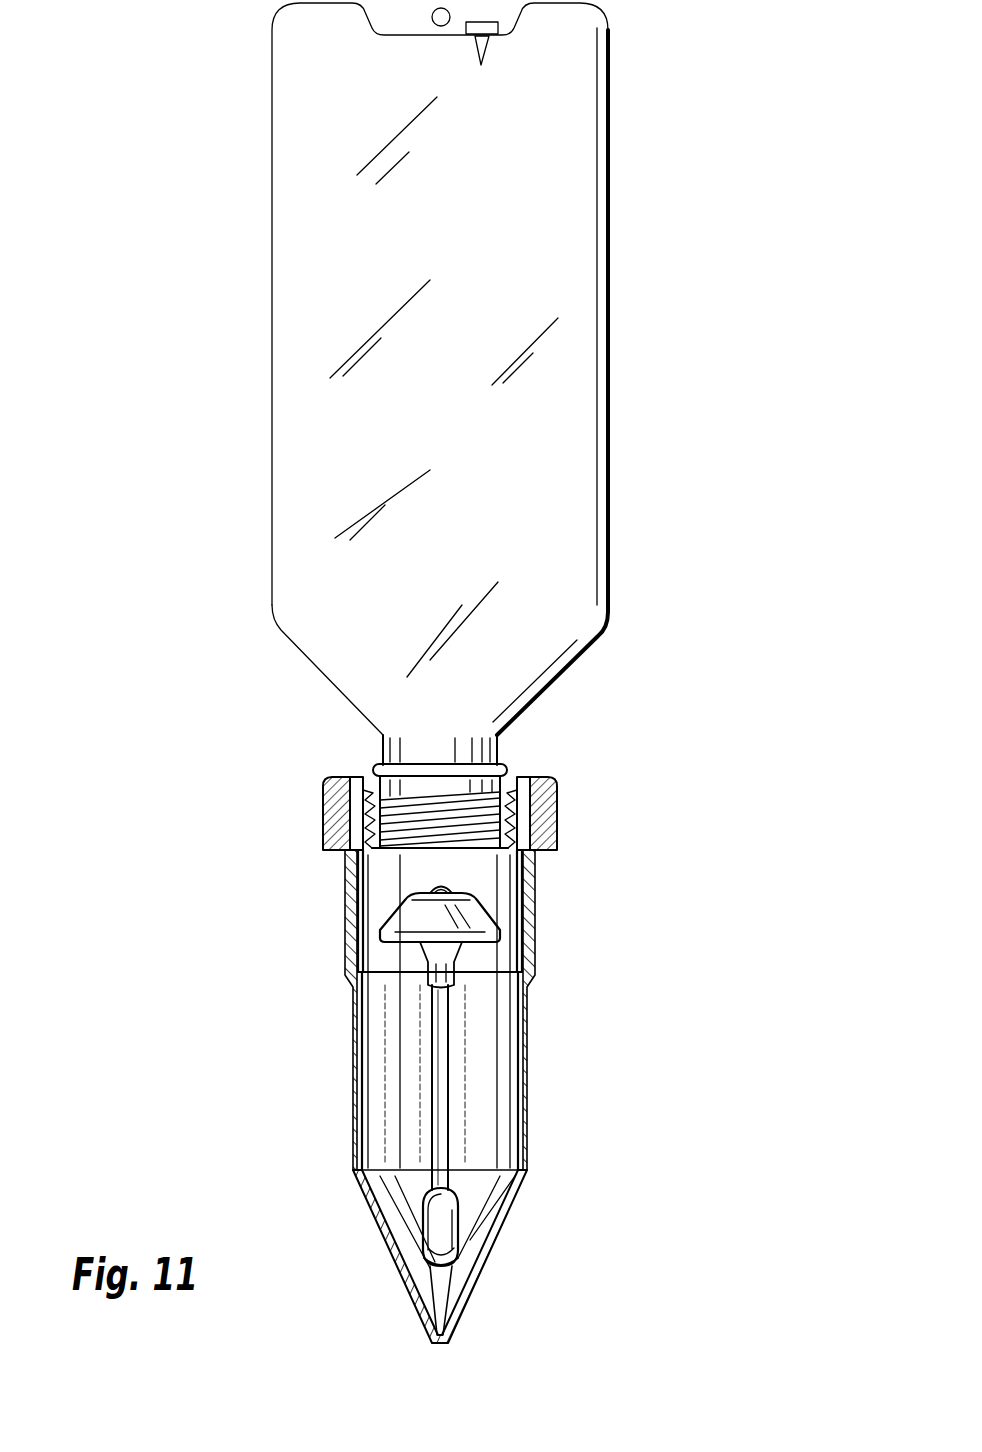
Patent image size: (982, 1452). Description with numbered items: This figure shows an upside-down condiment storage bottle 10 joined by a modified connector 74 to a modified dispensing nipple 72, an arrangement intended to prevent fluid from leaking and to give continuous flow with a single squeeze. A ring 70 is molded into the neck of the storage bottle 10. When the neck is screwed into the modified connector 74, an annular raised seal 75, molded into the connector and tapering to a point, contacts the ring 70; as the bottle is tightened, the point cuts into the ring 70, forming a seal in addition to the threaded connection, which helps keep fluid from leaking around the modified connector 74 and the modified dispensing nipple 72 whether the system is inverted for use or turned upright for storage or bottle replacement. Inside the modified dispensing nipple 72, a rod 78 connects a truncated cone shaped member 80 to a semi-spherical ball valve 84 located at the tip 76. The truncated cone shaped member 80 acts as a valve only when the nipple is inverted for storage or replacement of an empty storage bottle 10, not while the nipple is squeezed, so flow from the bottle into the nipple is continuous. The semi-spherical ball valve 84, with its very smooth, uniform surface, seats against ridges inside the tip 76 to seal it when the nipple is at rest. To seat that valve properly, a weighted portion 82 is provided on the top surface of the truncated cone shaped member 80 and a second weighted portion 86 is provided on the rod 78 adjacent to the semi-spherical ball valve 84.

The storage bottle 10 is at (632, 235).
The ring 70 is at (505, 772).
The annular raised seal 75 is at (373, 772).
The modified connector 74 is at (560, 800).
The modified dispensing nipple 72 is at (340, 1077).
The tip 76 is at (470, 1306).
The truncated cone shaped member 80 is at (498, 930).
The weighted portion 82 is at (430, 884).
The rod 78 is at (448, 1070).
The second weighted portion 86 is at (458, 1212).
The semi-spherical ball valve 84 is at (414, 1266).